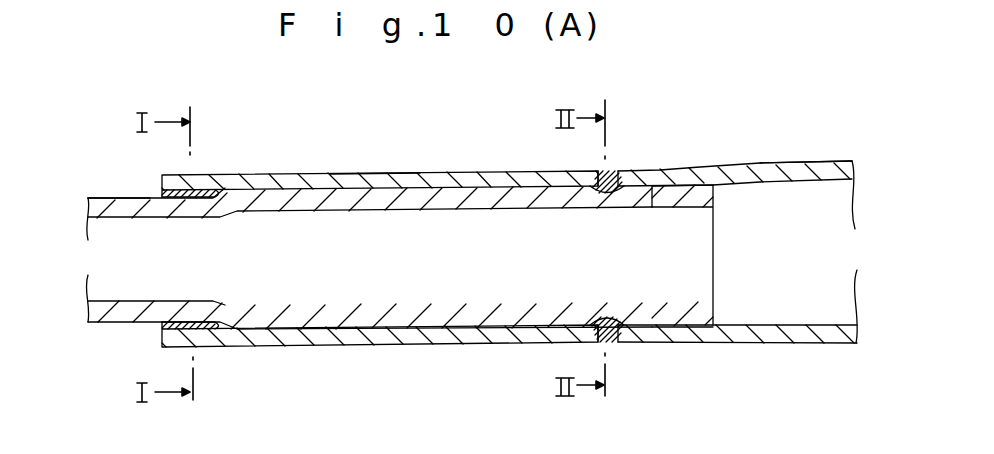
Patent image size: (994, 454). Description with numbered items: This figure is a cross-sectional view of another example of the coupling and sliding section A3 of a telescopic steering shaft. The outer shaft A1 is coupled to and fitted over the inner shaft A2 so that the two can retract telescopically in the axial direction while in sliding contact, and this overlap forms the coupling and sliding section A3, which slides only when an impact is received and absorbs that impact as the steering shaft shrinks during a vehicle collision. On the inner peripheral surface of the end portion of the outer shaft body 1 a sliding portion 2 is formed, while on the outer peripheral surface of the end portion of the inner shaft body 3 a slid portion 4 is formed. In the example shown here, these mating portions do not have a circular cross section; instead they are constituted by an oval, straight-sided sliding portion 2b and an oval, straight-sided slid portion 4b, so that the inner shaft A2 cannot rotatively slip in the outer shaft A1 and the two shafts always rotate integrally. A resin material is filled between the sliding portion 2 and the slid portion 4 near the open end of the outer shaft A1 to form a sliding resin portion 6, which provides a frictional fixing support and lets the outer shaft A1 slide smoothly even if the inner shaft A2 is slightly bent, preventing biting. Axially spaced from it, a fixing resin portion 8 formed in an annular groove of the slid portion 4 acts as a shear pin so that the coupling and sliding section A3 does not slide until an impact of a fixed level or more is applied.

The outer shaft body 1 is at (738, 166).
The sliding portion 2 is at (680, 186).
The oval, straight-sided sliding portion 2b is at (651, 189).
The inner shaft body 3 is at (121, 323).
The slid portion 4 is at (300, 188).
The oval, straight-sided slid portion 4b is at (273, 187).
The sliding resin portion 6 is at (165, 328).
The fixing resin portion 8 is at (606, 182).
The outer shaft A1 is at (778, 160).
The inner shaft A2 is at (104, 197).
The coupling and sliding section A3 is at (354, 174).